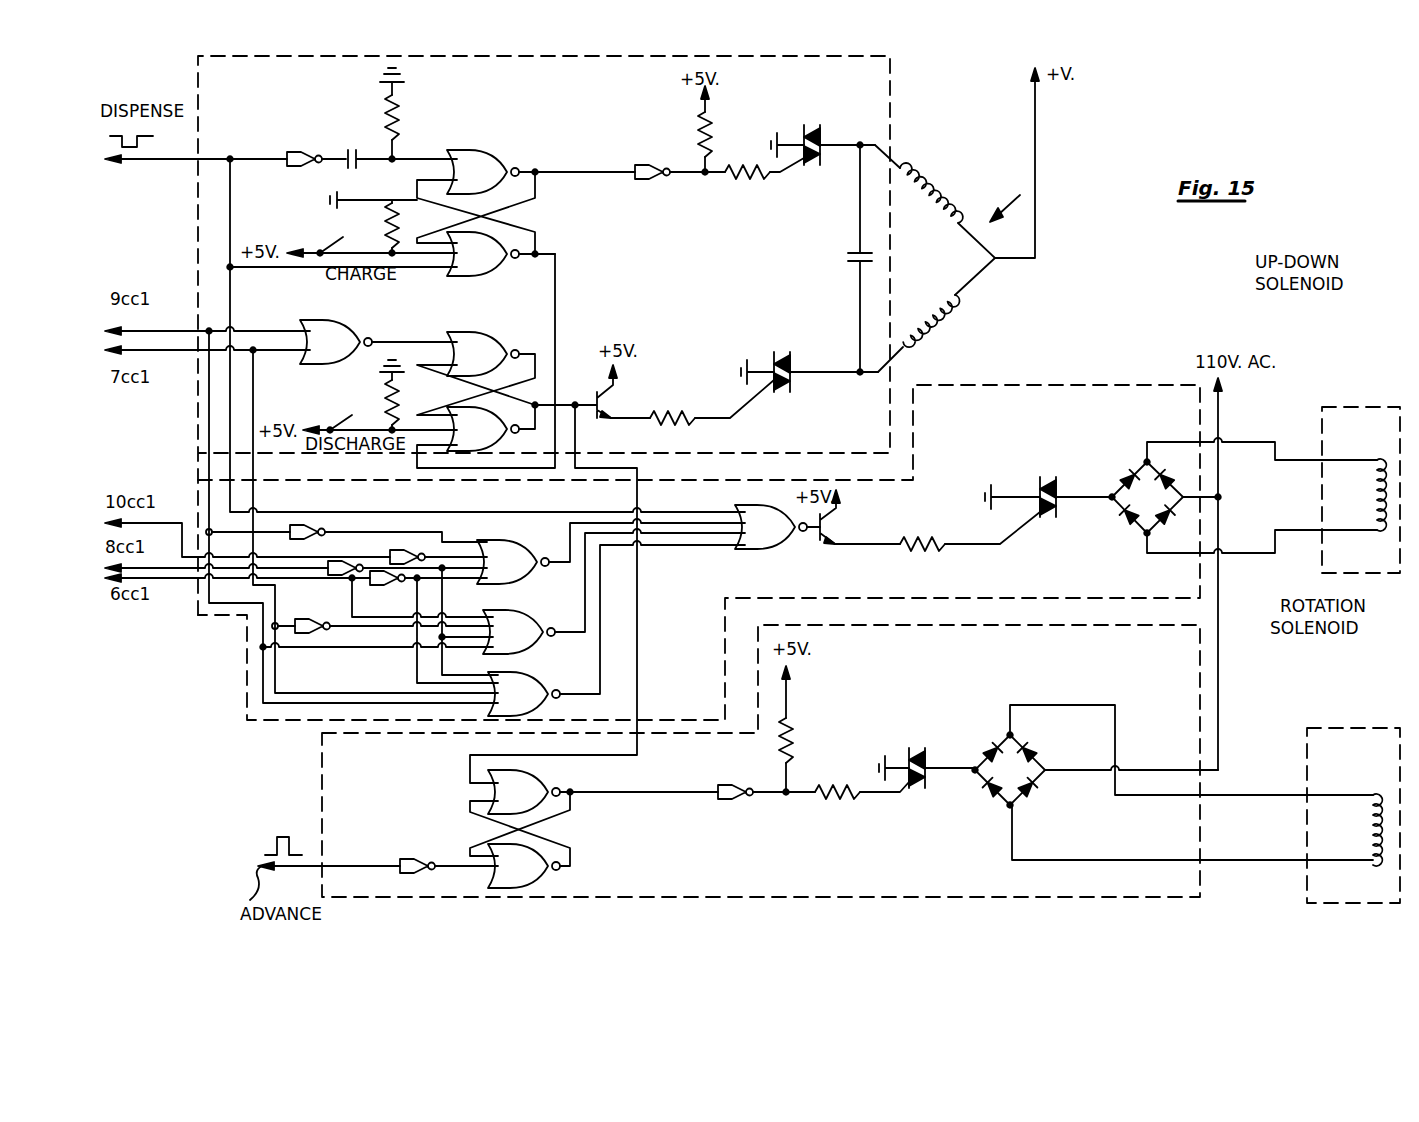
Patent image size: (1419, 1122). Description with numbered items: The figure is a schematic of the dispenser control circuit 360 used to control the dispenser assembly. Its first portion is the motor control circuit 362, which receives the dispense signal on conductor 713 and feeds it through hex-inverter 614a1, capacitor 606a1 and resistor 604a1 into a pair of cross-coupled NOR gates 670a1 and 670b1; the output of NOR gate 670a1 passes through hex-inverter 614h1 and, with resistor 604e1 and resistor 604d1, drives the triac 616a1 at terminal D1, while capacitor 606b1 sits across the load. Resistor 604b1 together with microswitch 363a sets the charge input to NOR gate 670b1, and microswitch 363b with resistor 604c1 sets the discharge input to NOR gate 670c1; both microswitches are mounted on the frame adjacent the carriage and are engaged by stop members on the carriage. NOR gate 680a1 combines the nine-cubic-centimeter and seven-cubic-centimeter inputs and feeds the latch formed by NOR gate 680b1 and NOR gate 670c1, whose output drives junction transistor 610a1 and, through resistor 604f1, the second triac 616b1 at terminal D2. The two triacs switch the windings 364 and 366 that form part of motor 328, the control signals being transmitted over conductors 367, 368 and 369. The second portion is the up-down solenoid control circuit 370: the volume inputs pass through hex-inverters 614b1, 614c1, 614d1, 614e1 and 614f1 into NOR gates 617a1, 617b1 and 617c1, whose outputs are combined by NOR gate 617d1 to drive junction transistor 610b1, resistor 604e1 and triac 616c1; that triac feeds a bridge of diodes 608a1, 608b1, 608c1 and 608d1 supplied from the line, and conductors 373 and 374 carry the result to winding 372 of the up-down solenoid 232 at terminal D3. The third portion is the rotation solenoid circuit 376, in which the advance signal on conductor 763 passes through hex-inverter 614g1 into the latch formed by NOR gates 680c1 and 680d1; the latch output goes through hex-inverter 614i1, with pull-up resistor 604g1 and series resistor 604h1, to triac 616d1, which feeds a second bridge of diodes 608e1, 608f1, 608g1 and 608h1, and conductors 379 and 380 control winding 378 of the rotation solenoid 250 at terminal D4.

The conductor 713 is at (175, 155).
The hex-inverter 614a1 is at (296, 152).
The capacitor 606a1 is at (352, 148).
The resistor 604a1 is at (408, 105).
The NOR gate 670a1 is at (530, 150).
The hex-inverter 614h1 is at (645, 165).
The resistor 604e1 is at (715, 110).
The resistor 604d1 is at (735, 180).
The triac 616a1 is at (840, 190).
The terminal D1 is at (860, 145).
The capacitor 606b1 is at (848, 257).
The winding 364 is at (930, 195).
The conductor 367 is at (895, 155).
The conductor 369 is at (1038, 157).
The motor 328 is at (999, 196).
The winding 366 is at (940, 322).
The conductor 368 is at (895, 352).
The motor control circuit 362 is at (888, 380).
The dispenser control circuit 360 is at (1080, 288).
The triac 616b1 is at (785, 352).
The terminal D2 is at (862, 375).
The resistor 604b1 is at (397, 205).
The microswitch 363a is at (340, 248).
The NOR gate 670b1 is at (496, 280).
The NOR gate 680a1 is at (312, 318).
The NOR gate 680b1 is at (480, 332).
The NOR gate 670c1 is at (500, 432).
The microswitch 363b is at (340, 425).
The resistor 604c1 is at (385, 400).
The junction transistor 610a1 is at (606, 418).
The resistor 604f1 is at (672, 412).
The hex-inverter 614b1 is at (345, 505).
The hex-inverter 614c1 is at (465, 505).
The hex-inverter 614d1 is at (348, 575).
The hex-inverter 614e1 is at (405, 590).
The hex-inverter 614f1 is at (345, 665).
The NOR gate 617a1 is at (538, 545).
The NOR gate 617b1 is at (540, 615).
The NOR gate 617c1 is at (558, 675).
The NOR gate 617d1 is at (750, 512).
The junction transistor 610b1 is at (810, 540).
The triac 616c1 is at (1042, 488).
The diode 608a1 is at (1122, 478).
The diode 608b1 is at (1128, 525).
The diode 608c1 is at (1160, 530).
The diode 608d1 is at (1175, 472).
The conductor 373 is at (1280, 450).
The conductor 374 is at (1285, 530).
The winding 372 is at (1373, 490).
The terminal D3 is at (1365, 462).
The up-down solenoid 232 is at (1350, 405).
The up-down solenoid control circuit 370 is at (1152, 385).
The NOR gate 680c1 is at (548, 788).
The NOR gate 680d1 is at (548, 878).
The conductor 763 is at (312, 860).
The hex-inverter 614g1 is at (415, 858).
The hex-inverter 614i1 is at (730, 805).
The resistor 604g1 is at (800, 725).
The resistor 604h1 is at (835, 805).
The triac 616d1 is at (910, 758).
The diode 608e1 is at (990, 750).
The diode 608f1 is at (990, 790).
The diode 608g1 is at (1030, 795).
The diode 608h1 is at (1030, 748).
The conductor 379 is at (1278, 795).
The rotation solenoid circuit 376 is at (1198, 782).
The conductor 380 is at (1270, 860).
The winding 378 is at (1370, 826).
The terminal D4 is at (1365, 790).
The rotation solenoid 250 is at (1375, 727).